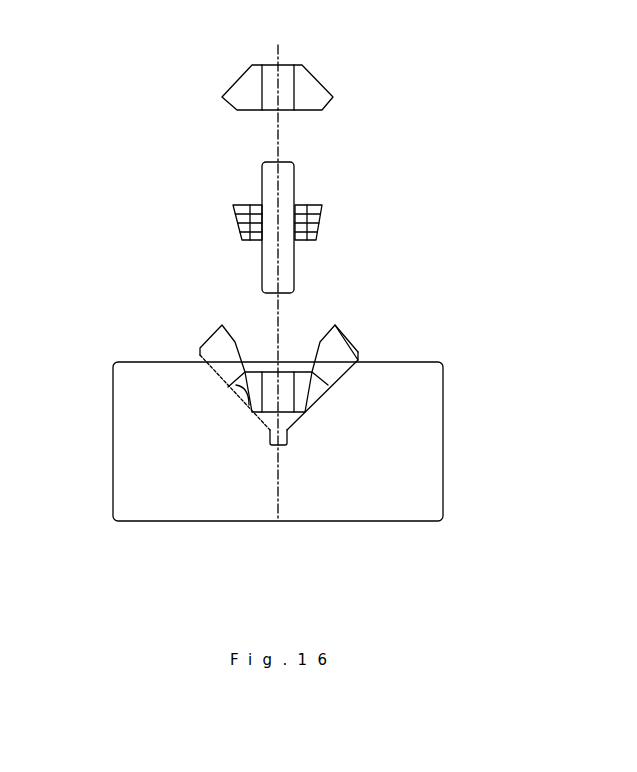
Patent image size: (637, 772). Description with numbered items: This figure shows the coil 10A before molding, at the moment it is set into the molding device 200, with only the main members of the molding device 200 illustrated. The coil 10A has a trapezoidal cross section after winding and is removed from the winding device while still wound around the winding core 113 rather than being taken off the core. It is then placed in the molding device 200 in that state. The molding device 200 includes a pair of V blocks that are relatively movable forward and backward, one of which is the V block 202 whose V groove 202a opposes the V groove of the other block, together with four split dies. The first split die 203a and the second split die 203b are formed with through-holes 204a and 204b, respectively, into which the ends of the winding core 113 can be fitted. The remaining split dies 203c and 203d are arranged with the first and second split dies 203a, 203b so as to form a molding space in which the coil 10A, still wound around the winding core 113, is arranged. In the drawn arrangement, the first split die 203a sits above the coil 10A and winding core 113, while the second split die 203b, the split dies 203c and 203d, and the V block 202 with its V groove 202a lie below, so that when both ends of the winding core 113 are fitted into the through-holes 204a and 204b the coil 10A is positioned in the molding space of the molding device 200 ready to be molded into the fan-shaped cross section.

The molding device 200 is at (448, 248).
The first split die 203a is at (310, 85).
The through-hole 204a is at (272, 82).
The winding core 113 is at (268, 268).
The coil 10A is at (322, 217).
The V block 202 is at (113, 441).
The V groove 202a is at (236, 385).
The second split die 203b is at (307, 398).
The split die 203c is at (212, 373).
The split die 203d is at (340, 371).
The through-hole 204b is at (268, 430).